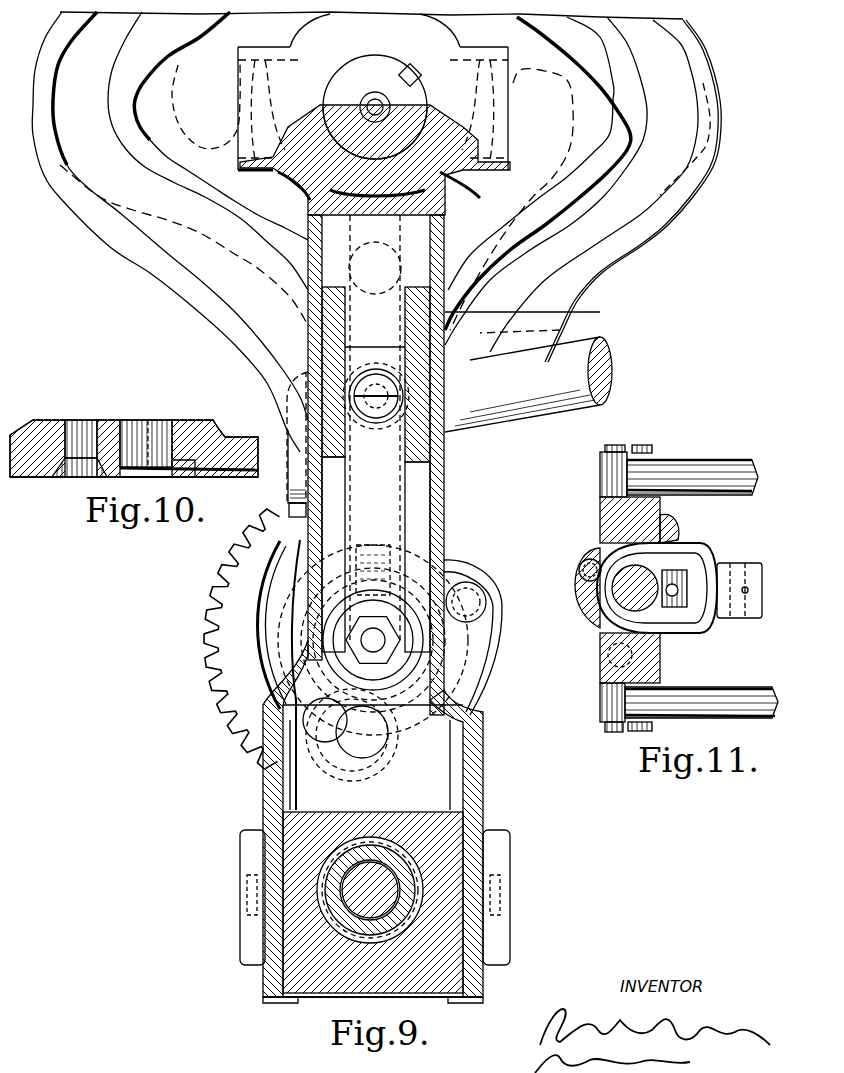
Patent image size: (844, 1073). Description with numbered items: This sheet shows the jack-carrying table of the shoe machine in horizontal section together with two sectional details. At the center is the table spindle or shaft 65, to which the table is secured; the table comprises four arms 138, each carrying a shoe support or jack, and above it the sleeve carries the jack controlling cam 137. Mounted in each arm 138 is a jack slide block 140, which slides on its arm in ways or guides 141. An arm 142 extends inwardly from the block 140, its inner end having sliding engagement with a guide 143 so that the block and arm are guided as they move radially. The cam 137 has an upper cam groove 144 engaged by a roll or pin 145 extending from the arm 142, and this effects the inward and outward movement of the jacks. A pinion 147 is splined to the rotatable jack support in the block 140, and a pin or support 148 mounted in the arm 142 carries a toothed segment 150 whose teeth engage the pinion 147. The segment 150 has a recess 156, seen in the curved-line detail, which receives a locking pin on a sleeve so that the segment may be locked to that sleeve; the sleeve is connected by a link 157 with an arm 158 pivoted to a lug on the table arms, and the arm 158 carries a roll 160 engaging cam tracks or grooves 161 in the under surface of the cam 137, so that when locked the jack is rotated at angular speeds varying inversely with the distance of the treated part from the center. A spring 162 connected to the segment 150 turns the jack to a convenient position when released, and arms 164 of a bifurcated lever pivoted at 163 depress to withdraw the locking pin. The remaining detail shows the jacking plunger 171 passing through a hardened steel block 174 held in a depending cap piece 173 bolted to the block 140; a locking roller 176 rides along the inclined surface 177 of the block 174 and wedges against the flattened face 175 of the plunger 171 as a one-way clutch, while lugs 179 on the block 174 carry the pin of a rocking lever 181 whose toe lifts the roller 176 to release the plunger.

In FIG. 9, the table spindle or shaft 65 is at (368, 140).
In FIG. 9, the jack controlling cam 137 is at (703, 135).
In FIG. 9, the arms 138 is at (445, 528).
In FIG. 9, the jack slide block 140 is at (432, 996).
In FIG. 9, the ways or guides 141 is at (462, 768).
In FIG. 9, the arm 142 is at (405, 487).
In FIG. 9, the guide 143 is at (540, 315).
In FIG. 9, the upper cam groove 144 is at (650, 200).
In FIG. 9, the roll or pin 145 is at (440, 445).
In FIG. 9, the pinion 147 is at (290, 822).
In FIG. 9, the pin or support 148 is at (395, 655).
In FIG. 9, the toothed segment 150 is at (215, 700).
In FIG. 10, the toothed segment 150 is at (200, 423).
In FIG. 10, the recess 156 is at (158, 428).
In FIG. 9, the link 157 is at (290, 508).
In FIG. 9, the arm 158 is at (575, 400).
In FIG. 9, the roll 160 is at (310, 362).
In FIG. 9, the cam tracks or grooves 161 is at (539, 331).
In FIG. 9, the spring 162 is at (253, 625).
In FIG. 11, the pivot 163 is at (650, 450).
In FIG. 11, the arms 164 is at (725, 492).
In FIG. 11, the jacking plunger 171 is at (625, 565).
In FIG. 11, the depending cap piece 173 is at (580, 600).
In FIG. 11, the hardened steel block 174 is at (595, 575).
In FIG. 11, the flattened face 175 is at (620, 620).
In FIG. 11, the locking roller 176 is at (672, 580).
In FIG. 11, the inclined surface 177 is at (690, 592).
In FIG. 11, the lugs 179 is at (750, 565).
In FIG. 11, the rocking lever 181 is at (748, 592).